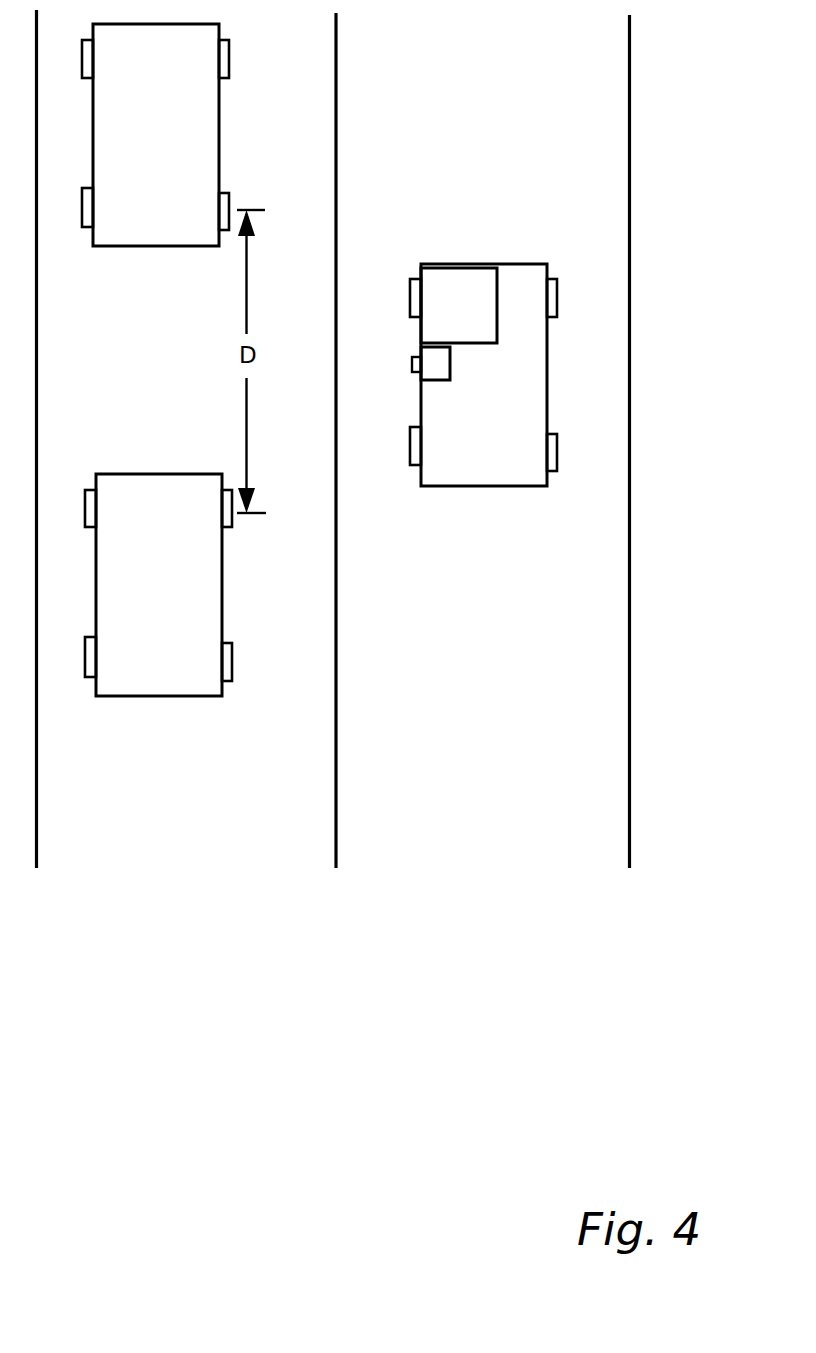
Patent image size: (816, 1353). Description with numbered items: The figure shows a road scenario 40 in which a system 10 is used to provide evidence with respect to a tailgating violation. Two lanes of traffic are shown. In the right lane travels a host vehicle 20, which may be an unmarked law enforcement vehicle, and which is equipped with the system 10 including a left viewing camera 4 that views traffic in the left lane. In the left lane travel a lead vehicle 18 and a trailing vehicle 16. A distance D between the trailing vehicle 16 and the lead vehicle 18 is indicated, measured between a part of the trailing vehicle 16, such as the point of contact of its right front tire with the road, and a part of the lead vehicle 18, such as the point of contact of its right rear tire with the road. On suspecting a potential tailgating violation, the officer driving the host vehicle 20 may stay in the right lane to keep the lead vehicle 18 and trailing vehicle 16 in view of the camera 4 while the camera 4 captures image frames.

The road scenario 40 is at (165, 918).
The lead vehicle 18 is at (219, 126).
The trailing vehicle 16 is at (222, 560).
The host vehicle 20 is at (547, 364).
The system 10 is at (459, 305).
The left viewing camera 4 is at (431, 365).